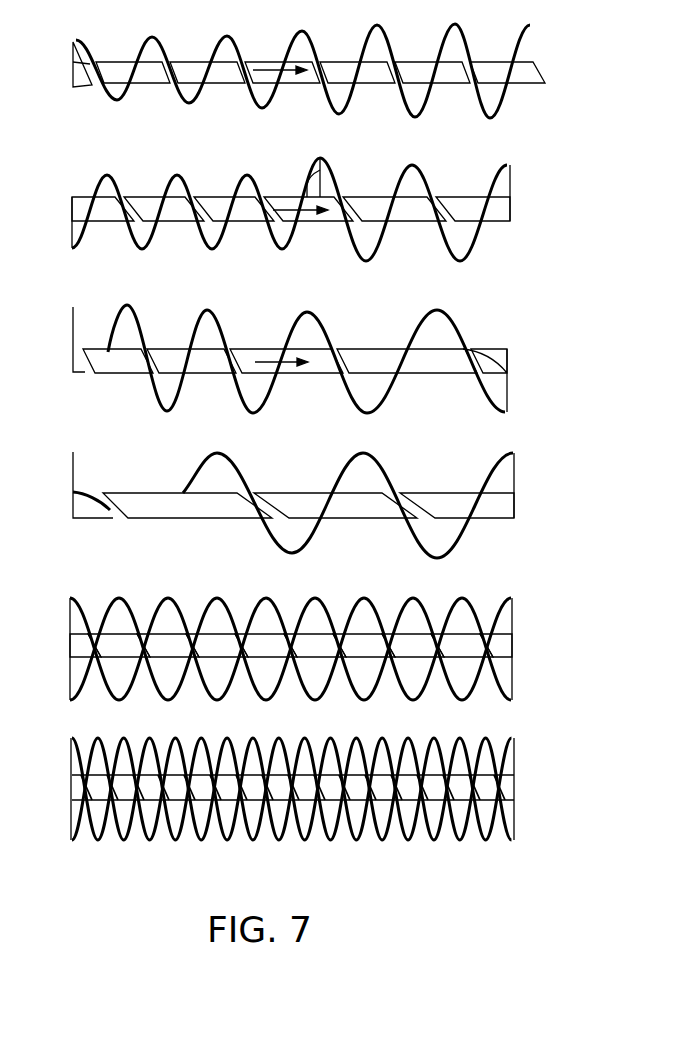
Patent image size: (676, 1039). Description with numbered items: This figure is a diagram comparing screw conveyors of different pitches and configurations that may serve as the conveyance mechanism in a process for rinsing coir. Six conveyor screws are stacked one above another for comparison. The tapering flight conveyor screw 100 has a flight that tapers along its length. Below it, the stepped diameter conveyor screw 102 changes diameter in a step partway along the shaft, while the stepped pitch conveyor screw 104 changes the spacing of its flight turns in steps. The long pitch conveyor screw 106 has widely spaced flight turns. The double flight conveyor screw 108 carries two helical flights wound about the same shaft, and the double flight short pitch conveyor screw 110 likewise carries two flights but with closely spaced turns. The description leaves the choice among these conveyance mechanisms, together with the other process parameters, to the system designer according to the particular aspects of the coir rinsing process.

The tapering flight conveyor screw 100 is at (527, 75).
The stepped diameter conveyor screw 102 is at (510, 218).
The stepped pitch conveyor screw 104 is at (507, 373).
The long pitch conveyor screw 106 is at (510, 500).
The double flight conveyor screw 108 is at (512, 650).
The double flight short pitch conveyor screw 110 is at (514, 790).